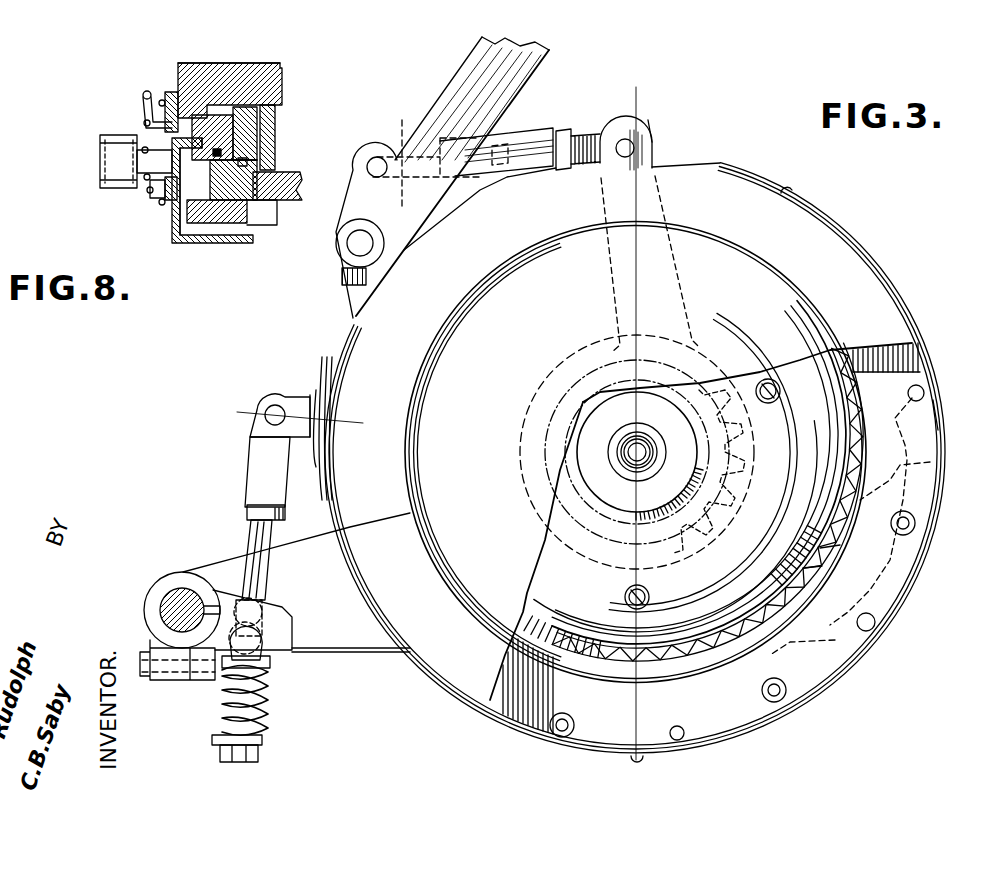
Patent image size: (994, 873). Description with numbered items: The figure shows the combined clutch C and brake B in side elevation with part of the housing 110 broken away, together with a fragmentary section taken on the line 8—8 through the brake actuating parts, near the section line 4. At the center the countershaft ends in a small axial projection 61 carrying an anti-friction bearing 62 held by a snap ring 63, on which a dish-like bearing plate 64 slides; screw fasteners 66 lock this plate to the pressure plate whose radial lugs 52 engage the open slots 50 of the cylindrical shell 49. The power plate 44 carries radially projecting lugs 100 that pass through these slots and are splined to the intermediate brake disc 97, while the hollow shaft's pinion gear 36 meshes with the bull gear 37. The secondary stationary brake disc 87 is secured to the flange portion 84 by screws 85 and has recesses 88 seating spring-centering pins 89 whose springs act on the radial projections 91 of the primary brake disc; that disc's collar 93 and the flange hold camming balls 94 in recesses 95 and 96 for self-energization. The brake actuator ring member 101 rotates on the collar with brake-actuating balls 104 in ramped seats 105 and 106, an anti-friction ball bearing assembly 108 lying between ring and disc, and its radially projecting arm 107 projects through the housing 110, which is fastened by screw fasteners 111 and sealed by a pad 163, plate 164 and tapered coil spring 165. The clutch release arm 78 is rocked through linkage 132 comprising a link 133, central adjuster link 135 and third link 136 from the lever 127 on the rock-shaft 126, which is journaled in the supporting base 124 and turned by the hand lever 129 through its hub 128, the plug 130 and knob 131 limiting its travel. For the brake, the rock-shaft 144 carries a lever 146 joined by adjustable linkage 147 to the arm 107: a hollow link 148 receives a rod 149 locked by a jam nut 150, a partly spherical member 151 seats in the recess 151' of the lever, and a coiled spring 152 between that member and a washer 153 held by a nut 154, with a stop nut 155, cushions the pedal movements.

In FIG. 3, the section line 4- 4 is at (618, 72).
In FIG. 3, the transmission gearing 8 is at (235, 397).
In FIG. 3, the pinion gear 36 is at (676, 528).
In FIG. 3, the bull gear 37 is at (687, 558).
In FIG. 8, the power plate 44 is at (277, 177).
In FIG. 3, the cylindrical shell 49 is at (730, 648).
In FIG. 8, the cylindrical shell 49 is at (268, 127).
In FIG. 3, the open slots 50 is at (790, 595).
In FIG. 8, the open slots 50 is at (267, 215).
In FIG. 3, the radially extending lugs 52 is at (822, 556).
In FIG. 3, the axial projection 61 is at (627, 447).
In FIG. 3, the anti-friction bearing 62 is at (633, 470).
In FIG. 3, the snap ring 63 is at (613, 450).
In FIG. 3, the bearing plate 64 is at (625, 530).
In FIG. 3, the screw fasteners 66 is at (768, 379).
In FIG. 3, the clutch release arm 78 is at (655, 128).
In FIG. 8, the flange portion 84 is at (264, 63).
In FIG. 3, the screws 85 is at (916, 523).
In FIG. 3, the secondary stationary brake disc 87 is at (883, 380).
In FIG. 8, the secondary stationary brake disc 87 is at (233, 220).
In FIG. 3, the recesses 88 is at (934, 416).
In FIG. 3, the spring-centering and supporting pin 89 is at (924, 394).
In FIG. 3, the radial projections 91 is at (930, 440).
In FIG. 8, the radial projections 91 is at (212, 182).
In FIG. 8, the collar 93 is at (262, 115).
In FIG. 8, the camming balls 94 is at (262, 85).
In FIG. 8, the recesses 95 is at (280, 92).
In FIG. 8, the recesses 96 is at (285, 72).
In FIG. 3, the intermediate brake disc 97 is at (930, 462).
In FIG. 8, the intermediate brake disc 97 is at (226, 182).
In FIG. 8, the radially projecting lugs 100 is at (253, 177).
In FIG. 8, the brake actuator ring member 101 is at (273, 127).
In FIG. 8, the brake-actuating balls 104 is at (227, 100).
In FIG. 8, the ramped seats 105 is at (170, 88).
In FIG. 8, the ramped seats 106 is at (230, 72).
In FIG. 3, the radially projecting arm 107 is at (292, 398).
In FIG. 8, the radially projecting arm 107 is at (167, 127).
In FIG. 8, the anti-friction ball bearing assembly 108 is at (213, 154).
In FIG. 3, the housing 110 is at (582, 752).
In FIG. 3, the screw fasteners 111 is at (790, 186).
In FIG. 3, the supporting base 124 is at (366, 299).
In FIG. 3, the rock-shaft 126 is at (348, 252).
In FIG. 3, the lever 127 is at (367, 172).
In FIG. 3, the hub 128 is at (347, 243).
In FIG. 3, the hand lever 129 is at (536, 61).
In FIG. 3, the plug 130 is at (566, 136).
In FIG. 3, the knob 131 is at (417, 222).
In FIG. 3, the linkage 132 is at (542, 134).
In FIG. 3, the link 133 is at (410, 132).
In FIG. 3, the central adjuster link 135 is at (503, 168).
In FIG. 3, the third link 136 is at (575, 172).
In FIG. 3, the rock-shaft 144 is at (168, 590).
In FIG. 3, the lever 146 is at (296, 653).
In FIG. 3, the adjustable linkage 147 is at (248, 470).
In FIG. 8, the adjustable linkage 147 is at (100, 180).
In FIG. 3, the hollow link 148 is at (260, 448).
In FIG. 3, the rod 149 is at (250, 545).
In FIG. 3, the jam nut 150 is at (246, 510).
In FIG. 3, the partly spherical member 151 is at (281, 665).
In FIG. 3, the partly spherical recess 151' is at (288, 632).
In FIG. 3, the coiled spring 152 is at (267, 718).
In FIG. 3, the washer 153 is at (263, 742).
In FIG. 3, the nut 154 is at (242, 757).
In FIG. 3, the nut 155 is at (262, 626).
In FIG. 8, the pad 163 is at (176, 226).
In FIG. 8, the plate 164 is at (167, 207).
In FIG. 8, the tapered coil spring 165 is at (153, 190).
In FIG. 3, the brake B is at (921, 486).
In FIG. 3, the clutch C is at (807, 536).